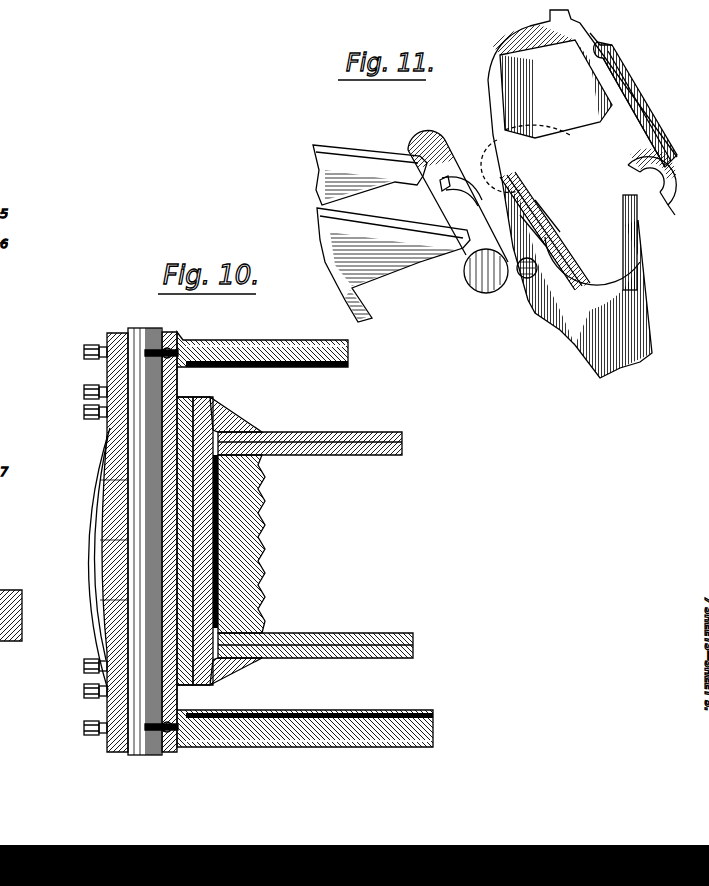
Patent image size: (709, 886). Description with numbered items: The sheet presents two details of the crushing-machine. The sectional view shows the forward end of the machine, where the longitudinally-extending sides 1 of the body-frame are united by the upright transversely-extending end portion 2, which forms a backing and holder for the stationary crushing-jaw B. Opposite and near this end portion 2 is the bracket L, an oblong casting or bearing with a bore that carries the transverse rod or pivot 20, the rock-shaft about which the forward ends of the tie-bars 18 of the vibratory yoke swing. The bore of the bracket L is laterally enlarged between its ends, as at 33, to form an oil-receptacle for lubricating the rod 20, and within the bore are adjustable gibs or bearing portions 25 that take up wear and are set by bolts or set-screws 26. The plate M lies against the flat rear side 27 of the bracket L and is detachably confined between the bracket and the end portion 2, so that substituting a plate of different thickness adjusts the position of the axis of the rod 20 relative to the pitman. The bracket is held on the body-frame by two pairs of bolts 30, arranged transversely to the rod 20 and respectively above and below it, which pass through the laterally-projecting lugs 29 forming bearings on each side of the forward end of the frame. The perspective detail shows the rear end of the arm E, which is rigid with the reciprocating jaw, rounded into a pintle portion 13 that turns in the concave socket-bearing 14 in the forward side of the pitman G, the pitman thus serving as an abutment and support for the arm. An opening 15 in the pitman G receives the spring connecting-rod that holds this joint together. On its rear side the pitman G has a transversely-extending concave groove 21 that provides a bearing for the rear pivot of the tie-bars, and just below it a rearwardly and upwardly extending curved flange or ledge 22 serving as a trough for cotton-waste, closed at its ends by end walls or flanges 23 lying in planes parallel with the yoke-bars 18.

In FIG. 10, the longitudinally-extending sides 1 is at (324, 545).
In FIG. 10, the upright transversely-extending end portion 2 is at (216, 500).
In FIG. 10, the tie-bars 18 is at (305, 534).
In FIG. 10, the transverse rod or pivot 20 is at (145, 532).
In FIG. 10, the bolts or set-screws 26 is at (84, 392).
In FIG. 10, the flat rear side 27 is at (160, 463).
In FIG. 10, the laterally-projecting lug 29 is at (236, 544).
In FIG. 10, the bolts 30 is at (84, 413).
In FIG. 10, the laterally enlarged portion of bore (oil-receptacle) 33 is at (150, 549).
In FIG. 10, the plate M is at (195, 538).
In FIG. 10, the crushing-jaw B is at (250, 544).
In FIG. 10, the bracket L is at (115, 620).
In FIG. 11, the arm E is at (391, 221).
In FIG. 11, the pitman G is at (655, 262).
In FIG. 11, the pintle portion 13 is at (493, 283).
In FIG. 11, the concave socket-bearing 14 is at (545, 303).
In FIG. 11, the opening 15 is at (523, 279).
In FIG. 11, the concave groove 21 is at (668, 206).
In FIG. 11, the curved flange or ledge 22 is at (636, 98).
In FIG. 11, the end walls or flanges 23 is at (676, 192).
In FIG. 11, the adjustable gibs or bearing portions 25 is at (607, 46).